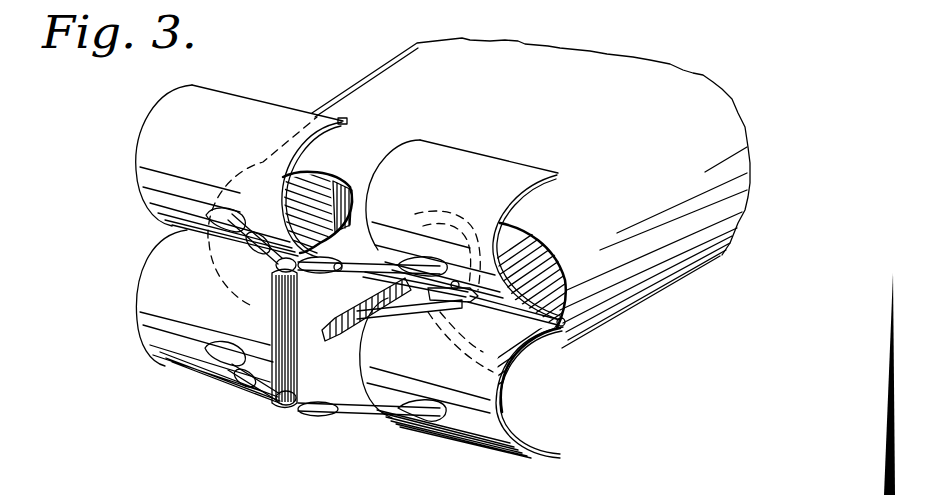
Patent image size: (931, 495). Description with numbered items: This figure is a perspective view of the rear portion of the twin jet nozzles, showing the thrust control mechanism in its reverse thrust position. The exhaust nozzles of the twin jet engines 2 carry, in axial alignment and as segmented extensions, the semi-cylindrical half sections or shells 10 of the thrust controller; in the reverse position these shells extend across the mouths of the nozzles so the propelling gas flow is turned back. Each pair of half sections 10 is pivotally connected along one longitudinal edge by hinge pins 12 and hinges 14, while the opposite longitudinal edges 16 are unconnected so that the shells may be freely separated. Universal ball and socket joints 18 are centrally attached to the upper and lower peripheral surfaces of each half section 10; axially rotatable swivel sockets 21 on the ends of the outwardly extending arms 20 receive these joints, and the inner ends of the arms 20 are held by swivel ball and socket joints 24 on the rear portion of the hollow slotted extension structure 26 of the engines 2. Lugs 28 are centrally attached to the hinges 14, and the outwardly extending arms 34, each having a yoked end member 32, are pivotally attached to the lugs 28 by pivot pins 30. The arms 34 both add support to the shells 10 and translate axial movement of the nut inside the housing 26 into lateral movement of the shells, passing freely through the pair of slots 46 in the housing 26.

The jet engine 2 is at (698, 88).
The semi-cylindrical half section 10 is at (247, 110).
The hinge pin 12 is at (568, 325).
The hinge 14 is at (545, 300).
The longitudinal edge 16 is at (347, 121).
The universal ball and socket joint 18 is at (217, 192).
The outwardly extending arm 20 is at (375, 262).
The swivel socket 21 is at (225, 215).
The swivel ball and socket joint 24 is at (265, 263).
The slotted extension structure 26 is at (336, 200).
The lug 28 is at (473, 302).
The pivot pin 30 is at (455, 283).
The yoked end member 32 is at (440, 310).
The outwardly extending arm 34 is at (410, 305).
The slot 46 is at (327, 327).